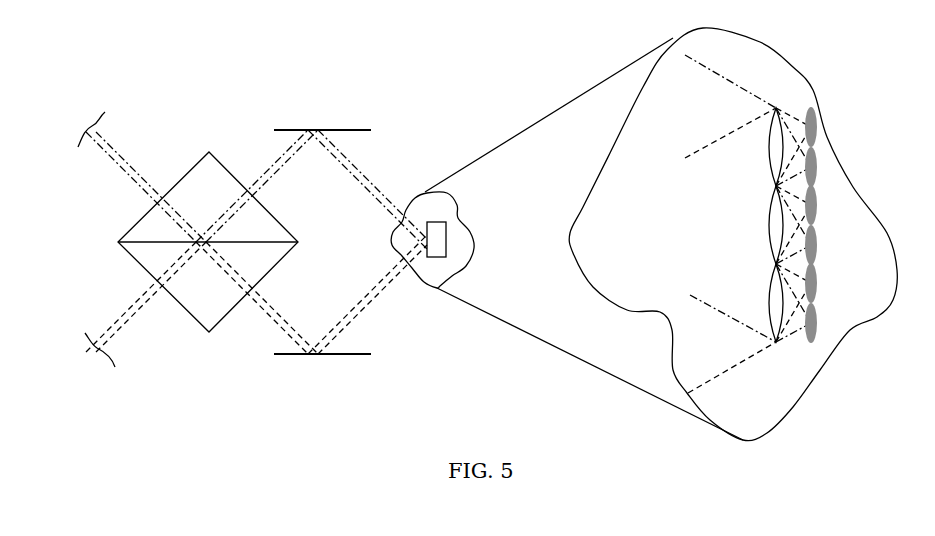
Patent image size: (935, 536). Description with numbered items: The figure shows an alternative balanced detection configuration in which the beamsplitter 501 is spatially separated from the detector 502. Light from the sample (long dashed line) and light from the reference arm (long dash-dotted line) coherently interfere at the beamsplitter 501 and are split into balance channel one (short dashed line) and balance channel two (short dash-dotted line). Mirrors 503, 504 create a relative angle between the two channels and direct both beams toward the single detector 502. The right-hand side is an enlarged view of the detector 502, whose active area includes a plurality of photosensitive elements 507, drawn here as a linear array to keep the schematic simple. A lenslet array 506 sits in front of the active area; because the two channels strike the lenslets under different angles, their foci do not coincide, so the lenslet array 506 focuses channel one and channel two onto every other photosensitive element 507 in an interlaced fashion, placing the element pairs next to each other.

The beamsplitter 501 is at (118, 240).
The detector 502 is at (458, 218).
The mirror 503 is at (285, 357).
The mirror 504 is at (285, 127).
The lenslet array 506 is at (760, 232).
The photosensitive elements 507 is at (822, 253).